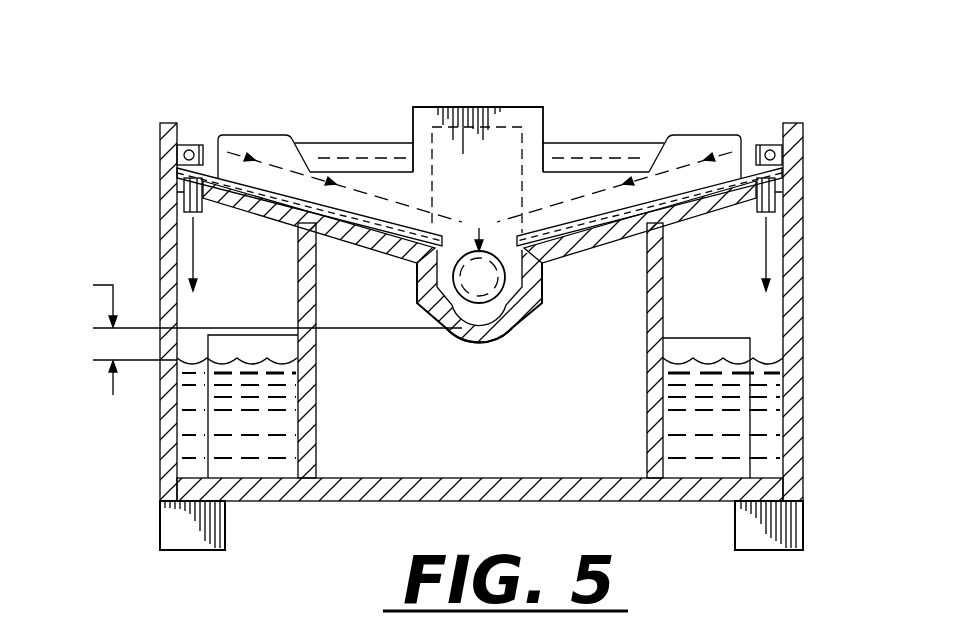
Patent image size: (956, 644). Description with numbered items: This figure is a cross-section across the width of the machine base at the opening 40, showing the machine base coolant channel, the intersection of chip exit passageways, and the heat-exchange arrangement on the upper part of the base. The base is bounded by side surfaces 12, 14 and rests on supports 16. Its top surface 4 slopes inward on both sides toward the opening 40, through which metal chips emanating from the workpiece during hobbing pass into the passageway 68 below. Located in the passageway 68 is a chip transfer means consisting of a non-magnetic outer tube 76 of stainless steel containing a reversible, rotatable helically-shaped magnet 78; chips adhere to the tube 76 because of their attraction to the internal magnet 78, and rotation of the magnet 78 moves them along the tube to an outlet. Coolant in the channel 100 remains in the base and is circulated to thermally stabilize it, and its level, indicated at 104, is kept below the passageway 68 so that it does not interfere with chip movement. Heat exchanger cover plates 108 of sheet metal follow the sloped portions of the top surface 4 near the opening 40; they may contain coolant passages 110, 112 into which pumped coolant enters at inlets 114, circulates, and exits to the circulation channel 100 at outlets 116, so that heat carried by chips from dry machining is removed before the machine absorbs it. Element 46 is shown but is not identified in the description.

The top surface 4 is at (334, 144).
The side surface 12 is at (158, 440).
The side surface 14 is at (803, 340).
The supports 16 is at (803, 515).
The opening 40 is at (510, 258).
The feed trough 46 is at (262, 135).
The passageway 68 is at (443, 287).
The non-magnetic outer tube 76 is at (500, 298).
The helically-shaped magnet 78 is at (482, 312).
The coolant channel 100 is at (740, 420).
The coolant level 104 is at (253, 331).
The heat exchanger cover plates 108 is at (582, 207).
The coolant passage 110 is at (652, 200).
The coolant passage 112 is at (649, 129).
The inlets 114 is at (770, 140).
The outlets 116 is at (778, 195).